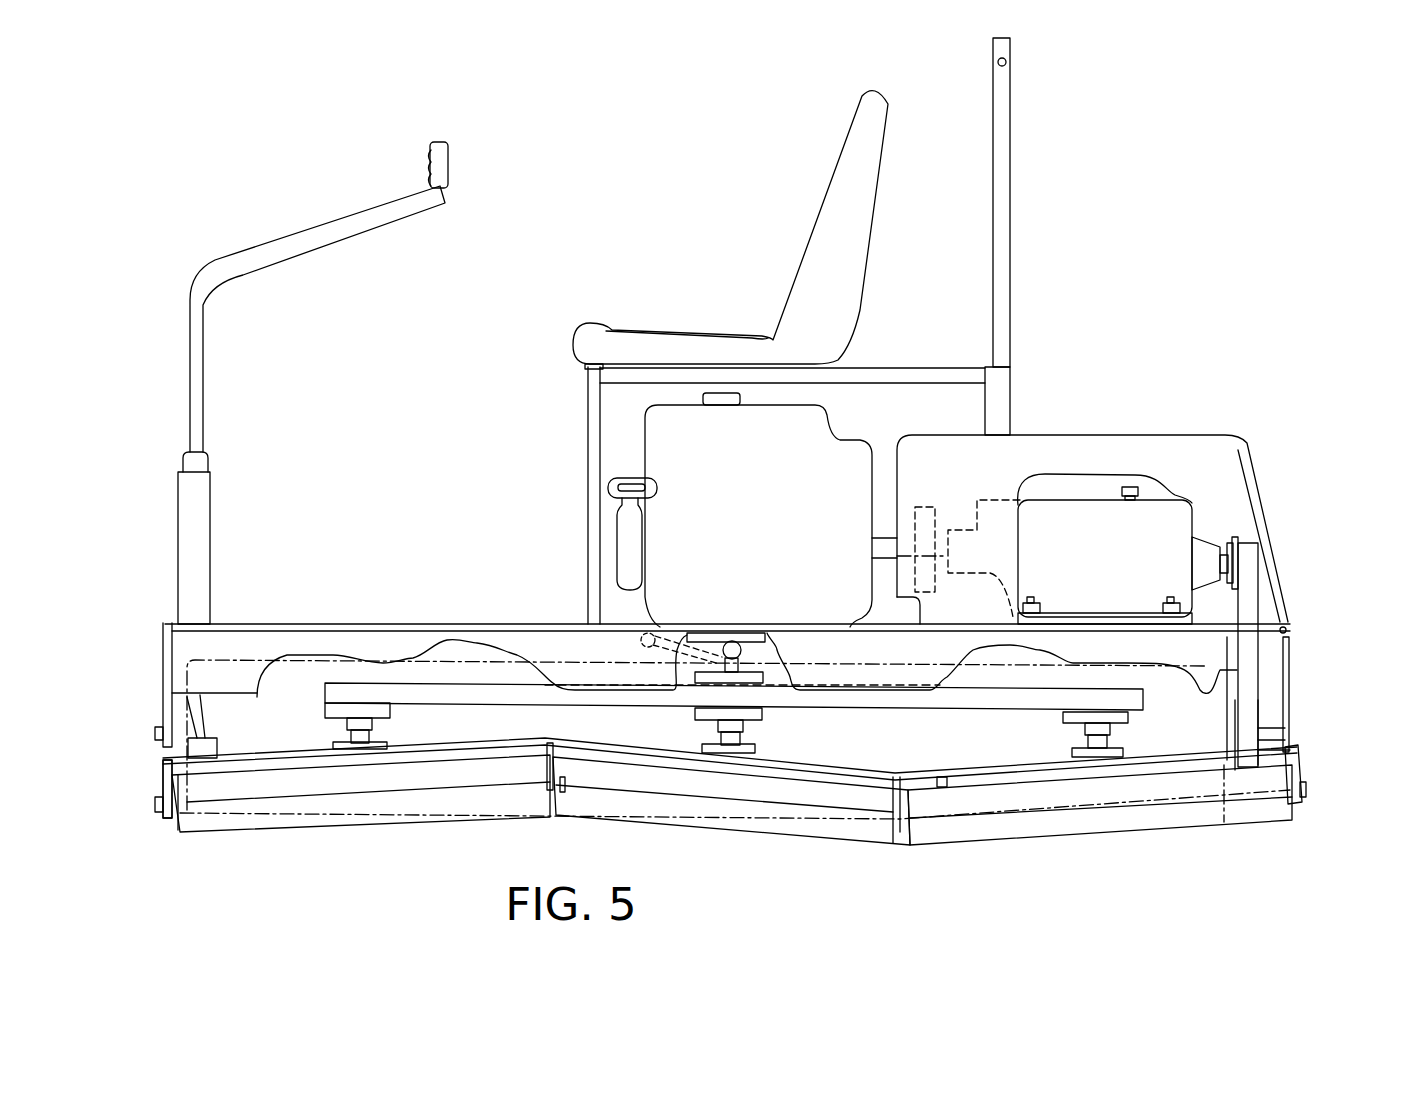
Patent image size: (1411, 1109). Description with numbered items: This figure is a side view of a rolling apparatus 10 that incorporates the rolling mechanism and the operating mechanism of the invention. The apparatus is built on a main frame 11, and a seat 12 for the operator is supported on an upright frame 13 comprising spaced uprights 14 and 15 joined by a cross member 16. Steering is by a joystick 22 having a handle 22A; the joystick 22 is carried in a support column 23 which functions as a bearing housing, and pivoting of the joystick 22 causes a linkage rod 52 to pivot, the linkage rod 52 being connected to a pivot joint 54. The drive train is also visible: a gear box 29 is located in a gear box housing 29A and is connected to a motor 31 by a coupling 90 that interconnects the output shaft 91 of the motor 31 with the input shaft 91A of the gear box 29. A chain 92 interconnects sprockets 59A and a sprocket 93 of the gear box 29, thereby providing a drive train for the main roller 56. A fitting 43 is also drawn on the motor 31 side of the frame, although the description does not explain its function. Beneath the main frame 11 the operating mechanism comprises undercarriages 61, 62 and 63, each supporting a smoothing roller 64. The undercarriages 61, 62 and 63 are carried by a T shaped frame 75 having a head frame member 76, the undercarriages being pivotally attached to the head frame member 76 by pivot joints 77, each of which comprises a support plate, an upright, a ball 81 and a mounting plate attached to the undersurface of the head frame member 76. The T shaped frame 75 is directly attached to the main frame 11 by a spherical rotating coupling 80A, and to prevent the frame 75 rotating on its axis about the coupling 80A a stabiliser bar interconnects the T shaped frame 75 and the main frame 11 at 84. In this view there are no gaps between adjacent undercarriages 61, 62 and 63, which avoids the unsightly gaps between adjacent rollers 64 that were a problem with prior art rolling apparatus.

The rolling apparatus 10 is at (1130, 172).
The main frame 11 is at (231, 607).
The seat 12 is at (856, 150).
The upright frame 13 is at (1064, 260).
The upright 14 is at (592, 393).
The upright 15 is at (1005, 128).
The cross member 16 is at (888, 382).
The joystick 22 is at (307, 243).
The handle 22A is at (442, 157).
The support column 23 is at (200, 533).
The gear box 29 is at (998, 534).
The gear box housing 29A is at (1213, 437).
The motor 31 is at (759, 463).
The fuel valve 43 is at (608, 490).
The linkage rod 52 is at (200, 703).
The pivot joint 54 is at (177, 752).
The main roller 56 is at (1232, 678).
The sprockets 59A is at (1262, 727).
The undercarriage 61 is at (160, 777).
The undercarriage 62 is at (1298, 757).
The undercarriage 63 is at (775, 758).
The smoothing roller 64 is at (327, 815).
The T shaped frame 75 is at (732, 819).
The head frame member 76 is at (955, 699).
The pivot joint 77 is at (331, 735).
The spherical rotating coupling 80A is at (738, 640).
The ball 81 is at (688, 643).
The stabiliser bar connection 84 is at (650, 633).
The coupling 90 is at (938, 507).
The output shaft 91 is at (885, 537).
The input shaft 91A is at (948, 532).
The chain 92 is at (1248, 613).
The sprocket 93 is at (1232, 540).